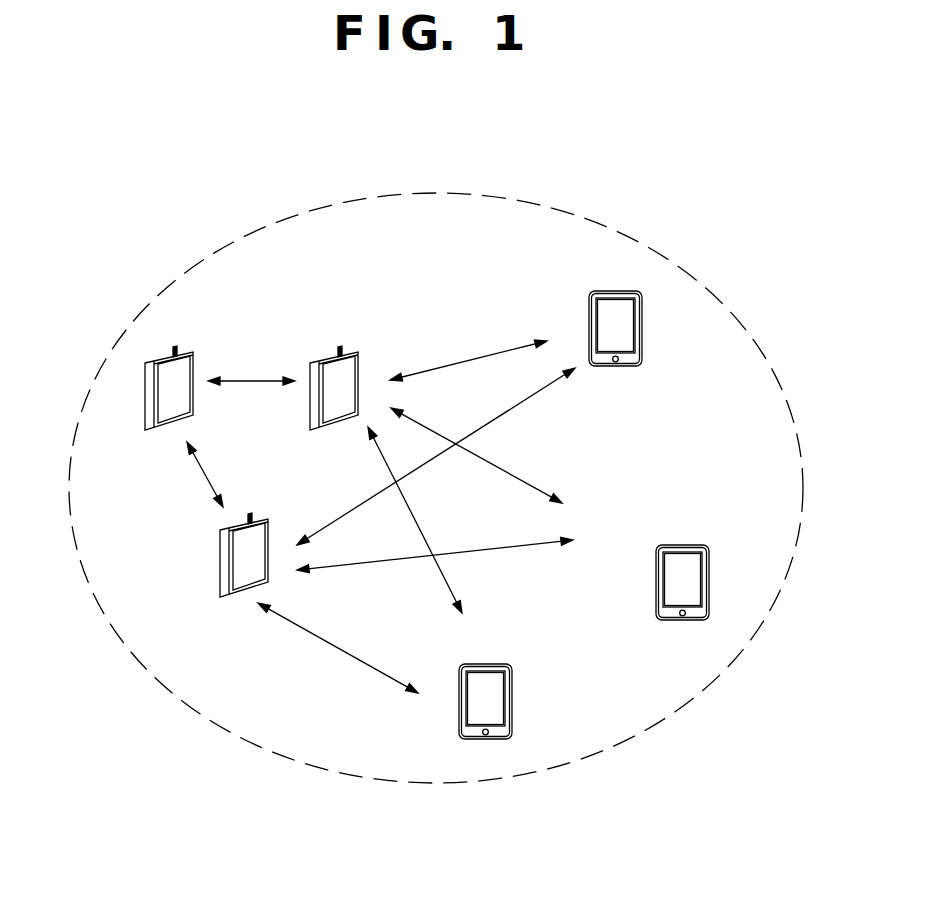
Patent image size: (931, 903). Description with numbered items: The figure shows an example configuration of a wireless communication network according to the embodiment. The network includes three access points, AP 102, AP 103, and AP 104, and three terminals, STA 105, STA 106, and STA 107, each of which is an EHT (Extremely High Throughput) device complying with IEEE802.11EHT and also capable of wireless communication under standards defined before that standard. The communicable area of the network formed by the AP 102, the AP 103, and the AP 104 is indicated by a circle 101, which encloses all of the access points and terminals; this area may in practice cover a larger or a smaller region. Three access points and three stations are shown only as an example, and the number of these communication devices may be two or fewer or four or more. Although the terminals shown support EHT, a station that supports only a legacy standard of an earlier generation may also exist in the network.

The circle 101 is at (740, 318).
The access point 102 is at (190, 367).
The access point 103 is at (358, 368).
The access point 104 is at (270, 530).
The terminal 105 is at (647, 335).
The terminal 106 is at (710, 583).
The terminal 107 is at (514, 690).